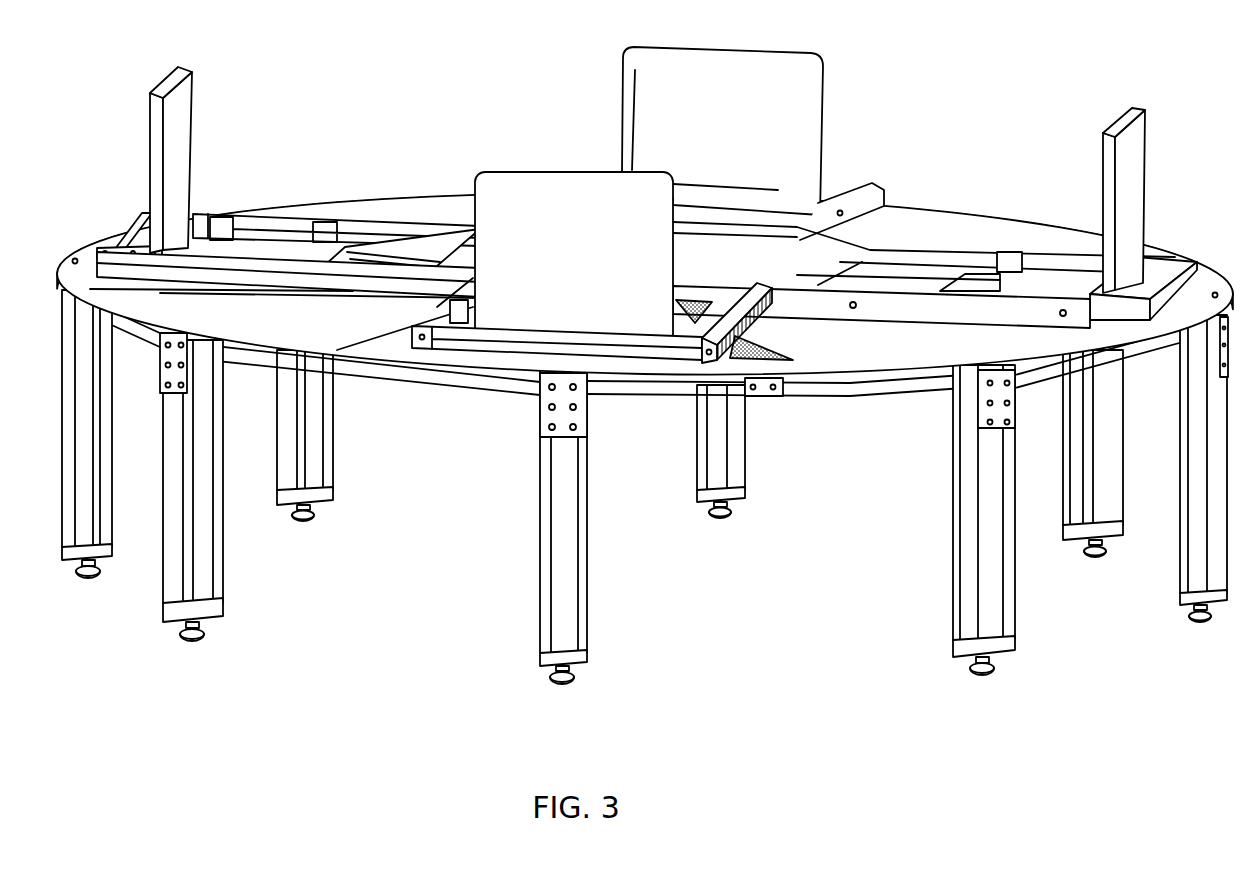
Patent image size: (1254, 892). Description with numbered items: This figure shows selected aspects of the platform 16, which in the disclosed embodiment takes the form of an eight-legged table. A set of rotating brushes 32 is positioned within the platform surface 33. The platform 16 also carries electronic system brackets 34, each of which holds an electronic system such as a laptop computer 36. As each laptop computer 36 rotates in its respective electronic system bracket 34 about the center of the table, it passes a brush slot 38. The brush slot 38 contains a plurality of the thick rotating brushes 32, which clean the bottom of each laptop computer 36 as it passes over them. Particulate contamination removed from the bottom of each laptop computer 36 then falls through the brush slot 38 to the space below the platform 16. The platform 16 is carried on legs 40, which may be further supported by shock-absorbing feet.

The platform 16 is at (645, 339).
The platform surface 33 is at (645, 266).
The laptop computer 36 is at (553, 260).
The electronic system bracket 34 is at (400, 327).
The rotating brushes 32 is at (780, 346).
The brush slot 38 is at (588, 543).
The legs 40 is at (578, 680).